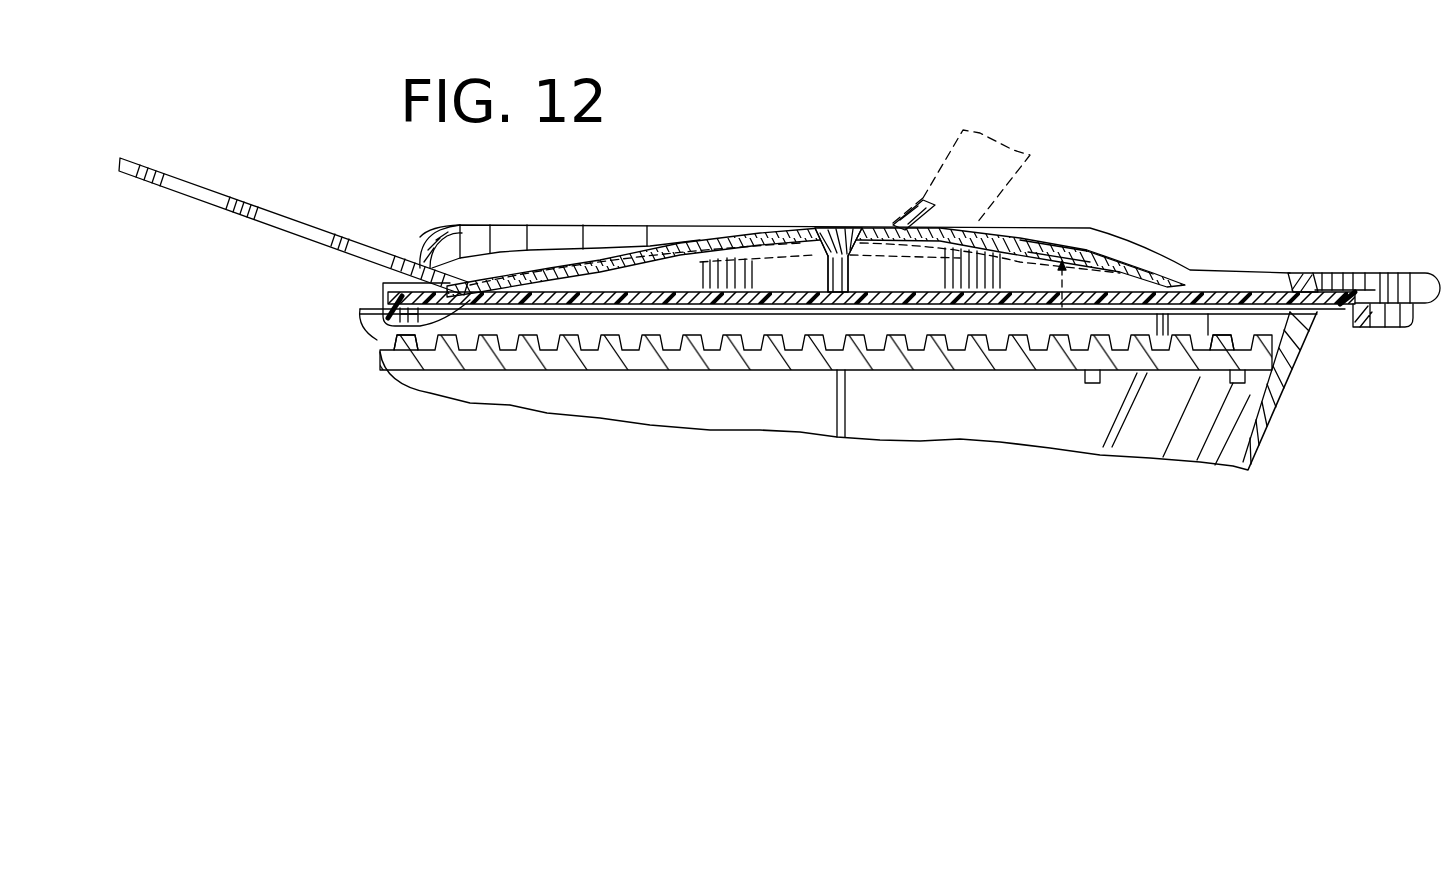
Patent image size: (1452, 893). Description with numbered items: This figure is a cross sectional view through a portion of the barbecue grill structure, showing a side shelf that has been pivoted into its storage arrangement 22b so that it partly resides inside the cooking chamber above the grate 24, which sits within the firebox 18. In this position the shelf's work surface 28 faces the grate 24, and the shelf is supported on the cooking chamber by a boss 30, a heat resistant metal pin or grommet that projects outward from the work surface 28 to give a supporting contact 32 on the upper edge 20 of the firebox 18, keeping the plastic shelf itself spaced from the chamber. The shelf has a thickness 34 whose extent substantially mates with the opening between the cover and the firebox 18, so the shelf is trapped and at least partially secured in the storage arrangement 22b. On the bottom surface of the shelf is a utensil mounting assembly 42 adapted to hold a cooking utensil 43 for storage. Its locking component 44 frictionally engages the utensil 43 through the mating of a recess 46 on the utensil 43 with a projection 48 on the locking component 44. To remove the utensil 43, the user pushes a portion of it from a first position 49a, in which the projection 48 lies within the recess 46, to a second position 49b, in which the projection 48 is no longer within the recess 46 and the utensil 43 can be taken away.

The firebox 18 is at (1290, 443).
The upper edge of the firebox 20 is at (1315, 313).
The storage arrangement of the shelf 22b is at (1294, 252).
The grate 24 is at (445, 352).
The work surface 28 is at (640, 314).
The boss 30 is at (1203, 303).
The supporting contact 32 is at (1203, 308).
The thickness of the shelf 34 is at (1307, 278).
The utensil mounting assembly 42 is at (1049, 182).
The cooking utensil 43 is at (663, 248).
The locking component 44 is at (838, 230).
The recess 46 is at (848, 262).
The projection 48 is at (826, 232).
The first position of the utensil 49a is at (1040, 243).
The second position of the utensil 49b is at (1060, 310).